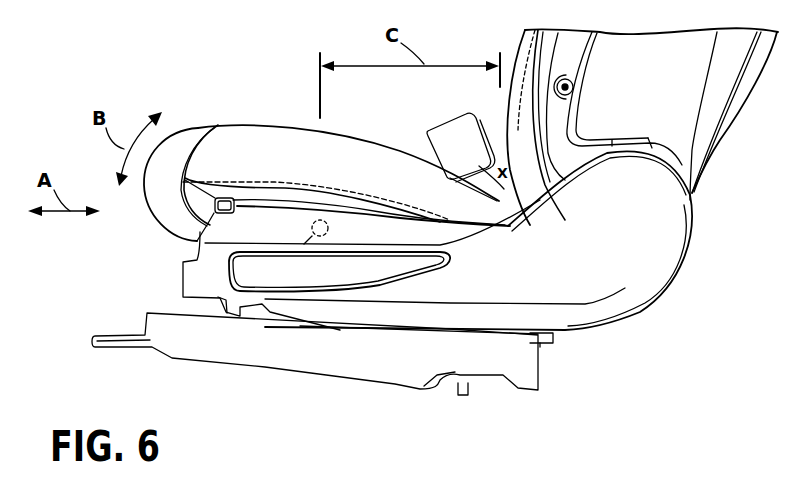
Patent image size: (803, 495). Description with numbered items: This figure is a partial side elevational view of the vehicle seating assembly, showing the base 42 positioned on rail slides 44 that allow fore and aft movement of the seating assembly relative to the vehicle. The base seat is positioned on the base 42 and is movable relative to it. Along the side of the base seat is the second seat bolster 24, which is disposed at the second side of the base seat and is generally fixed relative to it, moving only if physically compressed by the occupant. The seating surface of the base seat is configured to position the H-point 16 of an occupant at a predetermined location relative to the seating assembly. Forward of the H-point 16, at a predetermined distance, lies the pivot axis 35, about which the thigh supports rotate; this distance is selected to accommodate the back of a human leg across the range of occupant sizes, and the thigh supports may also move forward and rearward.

The H-point 16 is at (501, 166).
The second seat bolster 24 is at (358, 170).
The pivot axis 35 is at (290, 257).
The base 42 is at (605, 251).
The rail slides 44 is at (130, 345).